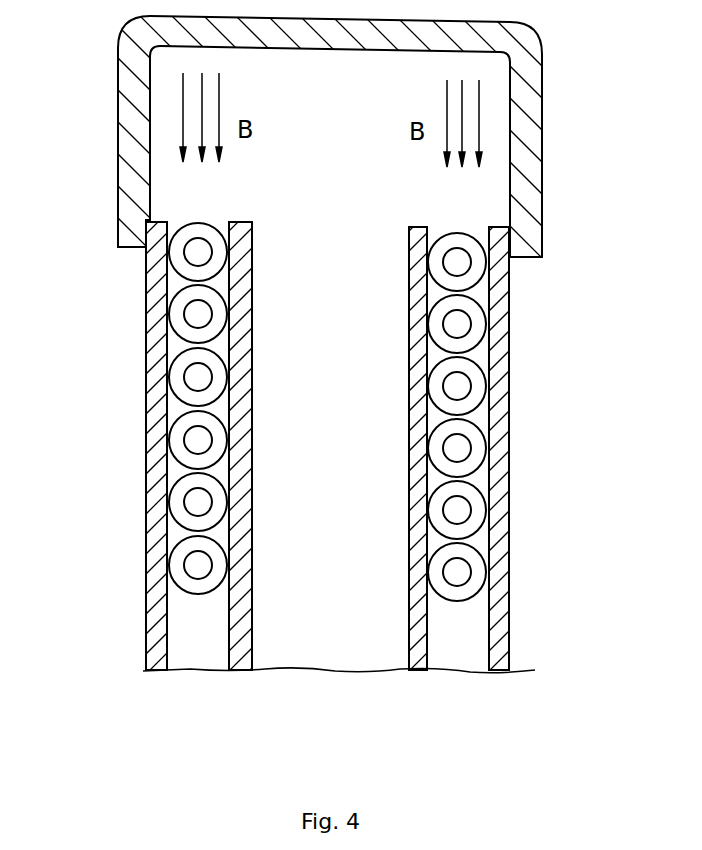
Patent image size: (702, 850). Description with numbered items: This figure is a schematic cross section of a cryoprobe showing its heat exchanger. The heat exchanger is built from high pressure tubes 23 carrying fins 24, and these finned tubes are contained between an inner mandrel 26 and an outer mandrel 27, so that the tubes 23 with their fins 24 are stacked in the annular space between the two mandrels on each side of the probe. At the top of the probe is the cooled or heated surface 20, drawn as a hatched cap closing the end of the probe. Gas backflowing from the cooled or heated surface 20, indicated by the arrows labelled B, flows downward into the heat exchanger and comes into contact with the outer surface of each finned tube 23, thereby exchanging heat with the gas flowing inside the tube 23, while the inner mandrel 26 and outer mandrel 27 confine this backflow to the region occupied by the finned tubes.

The cooled or heated surface 20 is at (118, 40).
The high pressure tube 23 is at (197, 440).
The fin 24 is at (182, 581).
The inner mandrel 26 is at (252, 588).
The outer mandrel 27 is at (145, 300).